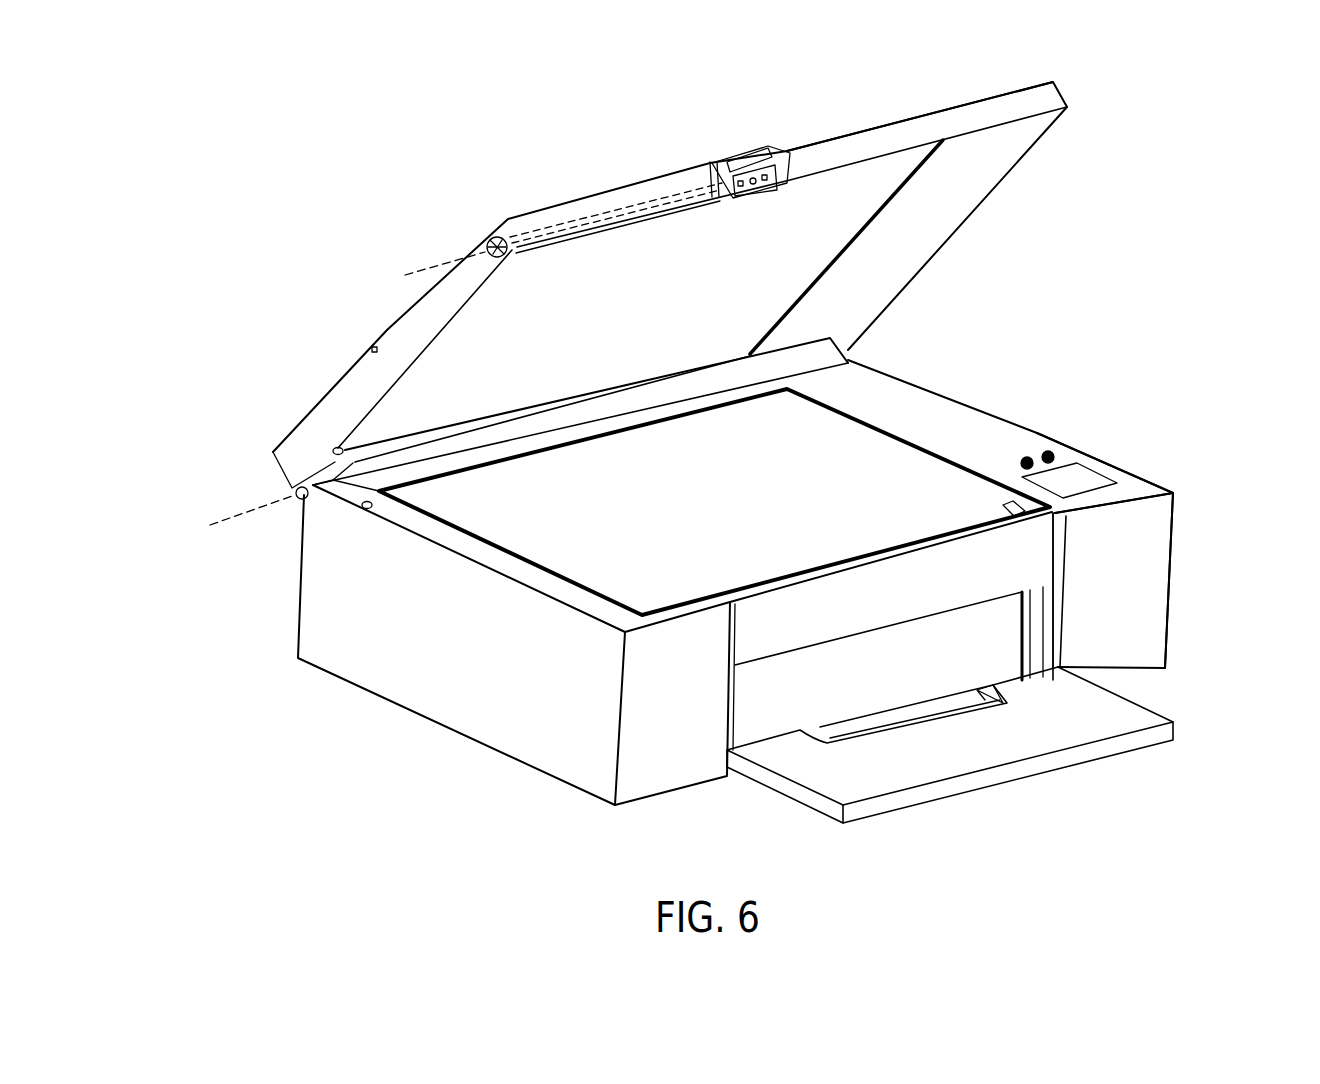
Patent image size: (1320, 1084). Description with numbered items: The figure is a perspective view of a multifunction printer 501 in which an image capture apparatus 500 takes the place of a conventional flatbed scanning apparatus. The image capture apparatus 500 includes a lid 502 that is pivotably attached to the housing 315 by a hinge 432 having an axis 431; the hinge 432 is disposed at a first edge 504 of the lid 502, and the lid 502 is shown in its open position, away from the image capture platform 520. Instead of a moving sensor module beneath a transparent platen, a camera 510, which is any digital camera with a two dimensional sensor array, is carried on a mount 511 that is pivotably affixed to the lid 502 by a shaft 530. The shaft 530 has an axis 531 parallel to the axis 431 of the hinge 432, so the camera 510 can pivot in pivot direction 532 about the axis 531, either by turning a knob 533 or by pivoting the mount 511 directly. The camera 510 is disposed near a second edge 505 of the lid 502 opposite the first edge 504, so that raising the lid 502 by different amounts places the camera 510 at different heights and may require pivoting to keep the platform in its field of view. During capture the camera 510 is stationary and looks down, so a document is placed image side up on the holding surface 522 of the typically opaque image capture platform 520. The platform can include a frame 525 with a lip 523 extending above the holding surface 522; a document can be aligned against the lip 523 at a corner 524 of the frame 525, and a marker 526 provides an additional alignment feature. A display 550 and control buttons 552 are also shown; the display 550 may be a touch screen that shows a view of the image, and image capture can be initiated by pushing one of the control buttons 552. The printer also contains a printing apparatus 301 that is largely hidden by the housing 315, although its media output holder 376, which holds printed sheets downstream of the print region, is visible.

The printing apparatus 301 is at (413, 741).
The housing 315 is at (412, 680).
The media output holder 376 is at (805, 768).
The axis 431 is at (241, 500).
The hinge 432 is at (297, 500).
The image capture apparatus 500 is at (1138, 315).
The multifunction printer 501 is at (318, 145).
The lid 502 is at (1003, 196).
The first edge 504 is at (278, 475).
The second edge 505 is at (900, 127).
The camera 510 is at (755, 185).
The mount 511 is at (745, 150).
The image capture platform 520 is at (854, 398).
The holding surface 522 is at (866, 453).
The lip 523 is at (960, 465).
The corner 524 is at (1058, 513).
The frame 525 is at (1010, 512).
The marker 526 is at (1016, 503).
The shaft 530 is at (640, 183).
The axis 531 is at (434, 270).
The pivot direction 532 is at (344, 310).
The knob 533 is at (494, 238).
The display 550 is at (1092, 475).
The control buttons 552 is at (1052, 452).